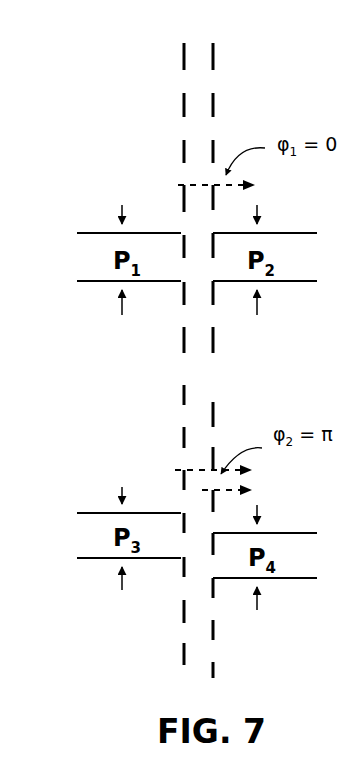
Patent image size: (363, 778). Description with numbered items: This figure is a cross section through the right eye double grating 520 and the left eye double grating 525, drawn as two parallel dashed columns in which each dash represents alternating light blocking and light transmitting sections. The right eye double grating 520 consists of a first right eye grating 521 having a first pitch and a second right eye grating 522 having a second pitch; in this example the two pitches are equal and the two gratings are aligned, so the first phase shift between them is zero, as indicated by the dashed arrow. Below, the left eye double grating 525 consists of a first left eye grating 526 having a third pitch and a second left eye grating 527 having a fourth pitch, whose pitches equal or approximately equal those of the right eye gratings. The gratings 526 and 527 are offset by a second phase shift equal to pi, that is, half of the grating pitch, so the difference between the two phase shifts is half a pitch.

The right eye double grating 520 is at (193, 40).
The first right eye grating 521 is at (168, 72).
The second right eye grating 522 is at (227, 72).
The left eye double grating 525 is at (197, 670).
The first left eye grating 526 is at (168, 405).
The second left eye grating 527 is at (227, 405).